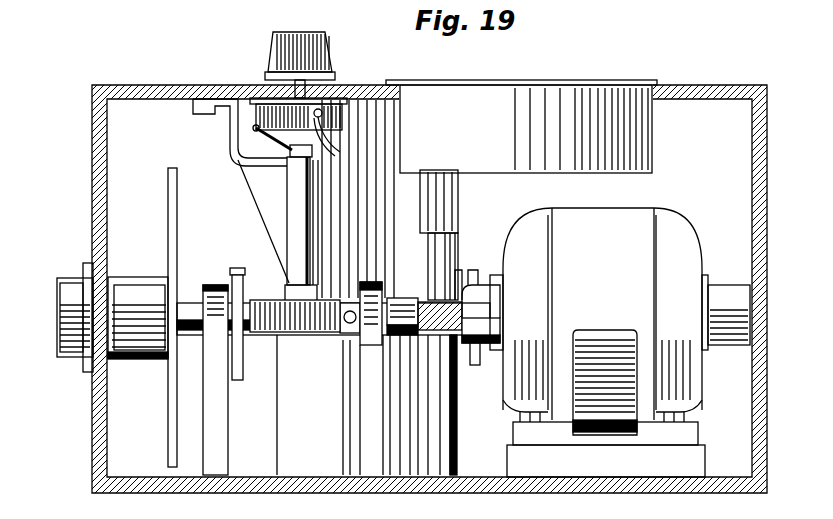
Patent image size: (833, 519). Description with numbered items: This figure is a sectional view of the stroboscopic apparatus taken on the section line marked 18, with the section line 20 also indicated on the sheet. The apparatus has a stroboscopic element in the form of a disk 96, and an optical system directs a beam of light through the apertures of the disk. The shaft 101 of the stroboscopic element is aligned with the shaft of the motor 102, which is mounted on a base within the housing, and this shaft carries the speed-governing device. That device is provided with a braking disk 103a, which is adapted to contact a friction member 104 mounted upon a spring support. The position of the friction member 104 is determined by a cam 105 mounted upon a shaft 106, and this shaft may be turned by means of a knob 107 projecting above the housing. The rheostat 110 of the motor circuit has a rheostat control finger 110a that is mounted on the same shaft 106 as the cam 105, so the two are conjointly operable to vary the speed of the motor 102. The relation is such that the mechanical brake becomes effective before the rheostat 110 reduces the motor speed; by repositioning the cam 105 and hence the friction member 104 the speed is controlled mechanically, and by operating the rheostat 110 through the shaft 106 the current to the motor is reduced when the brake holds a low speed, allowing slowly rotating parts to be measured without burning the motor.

The section line 18- 18 is at (45, 180).
The section line 20- 20 is at (108, 3).
The disk 96 is at (177, 200).
The shaft 101 is at (183, 302).
The motor 102 is at (626, 342).
The braking disk 103a is at (236, 278).
The friction member 104 is at (253, 347).
The cam 105 is at (318, 337).
The shaft 106 is at (287, 157).
The knob 107 is at (322, 45).
The rheostat 110 is at (342, 118).
The rheostat control finger 110a is at (256, 130).